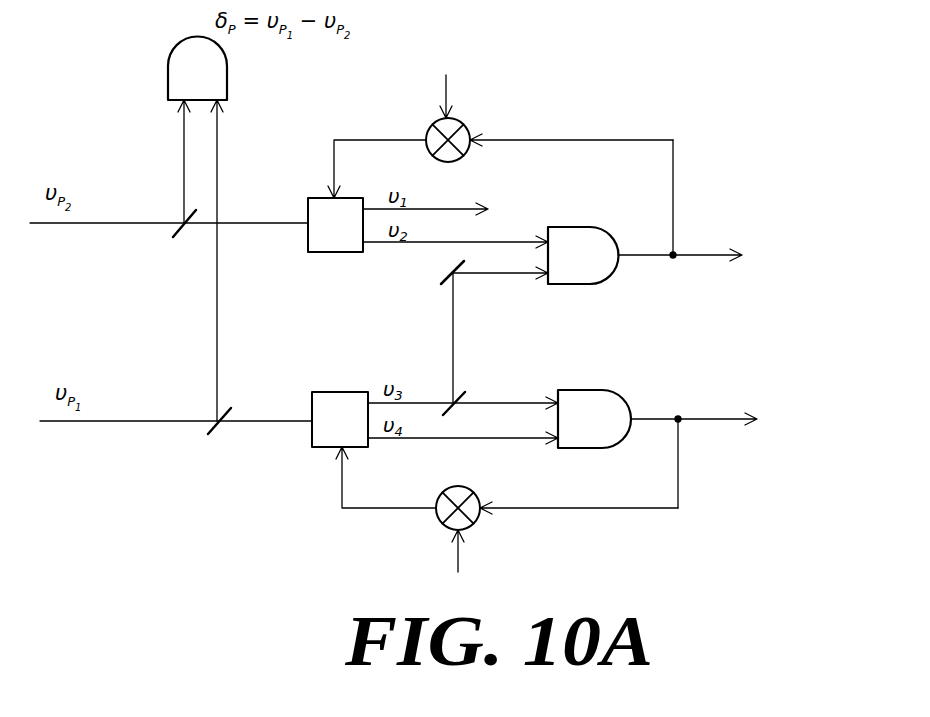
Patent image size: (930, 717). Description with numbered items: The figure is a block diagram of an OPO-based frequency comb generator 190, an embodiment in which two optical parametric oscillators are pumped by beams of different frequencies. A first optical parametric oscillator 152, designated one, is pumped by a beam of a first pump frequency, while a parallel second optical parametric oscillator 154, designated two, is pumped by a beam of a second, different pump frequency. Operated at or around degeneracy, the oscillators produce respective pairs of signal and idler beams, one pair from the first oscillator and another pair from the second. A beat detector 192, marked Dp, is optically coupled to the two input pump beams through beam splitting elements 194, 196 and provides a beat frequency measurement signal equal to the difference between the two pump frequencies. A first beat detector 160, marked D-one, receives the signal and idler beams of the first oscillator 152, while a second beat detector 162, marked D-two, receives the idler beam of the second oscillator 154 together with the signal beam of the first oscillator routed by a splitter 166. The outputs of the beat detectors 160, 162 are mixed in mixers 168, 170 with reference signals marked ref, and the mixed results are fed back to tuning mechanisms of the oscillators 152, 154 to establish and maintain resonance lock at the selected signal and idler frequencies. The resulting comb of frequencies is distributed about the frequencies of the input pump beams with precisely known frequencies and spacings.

The OPO-based frequency comb generator 190 is at (159, 494).
The beat detector 192 is at (227, 76).
The beam splitting element 194 is at (226, 417).
The beam splitting element 196 is at (190, 218).
The first optical parametric oscillator 152 is at (320, 447).
The second optical parametric oscillator 154 is at (328, 252).
The first beat detector 160 is at (606, 390).
The second beat detector 162 is at (594, 227).
The splitter 166 is at (450, 264).
The mixer 168 is at (470, 490).
The mixer 170 is at (463, 126).